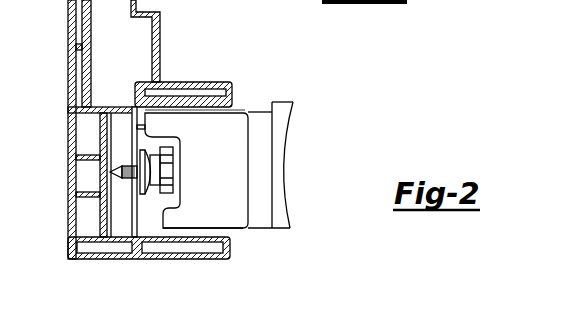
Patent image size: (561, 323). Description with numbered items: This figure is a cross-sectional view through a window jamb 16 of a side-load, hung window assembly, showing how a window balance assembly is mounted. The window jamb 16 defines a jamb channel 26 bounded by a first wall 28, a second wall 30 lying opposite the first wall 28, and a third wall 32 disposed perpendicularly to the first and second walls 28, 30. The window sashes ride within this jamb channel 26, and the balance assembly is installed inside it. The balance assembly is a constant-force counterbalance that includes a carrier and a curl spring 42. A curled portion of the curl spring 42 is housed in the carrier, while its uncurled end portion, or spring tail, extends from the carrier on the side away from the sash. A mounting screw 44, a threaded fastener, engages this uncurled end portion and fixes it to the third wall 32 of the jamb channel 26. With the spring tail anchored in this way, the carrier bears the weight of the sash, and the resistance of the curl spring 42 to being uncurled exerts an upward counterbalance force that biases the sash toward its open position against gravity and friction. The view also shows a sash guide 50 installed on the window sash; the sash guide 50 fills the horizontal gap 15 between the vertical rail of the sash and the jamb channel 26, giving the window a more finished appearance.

The horizontal gap 15 is at (150, 108).
The window jamb 16 is at (138, 103).
The first wall 28 is at (210, 110).
The curl spring 42 is at (135, 133).
The mounting screw 44 is at (150, 181).
The sash guide 50 is at (235, 148).
The jamb channel 26 is at (242, 236).
The second wall 30 is at (166, 236).
The third wall 32 is at (143, 218).